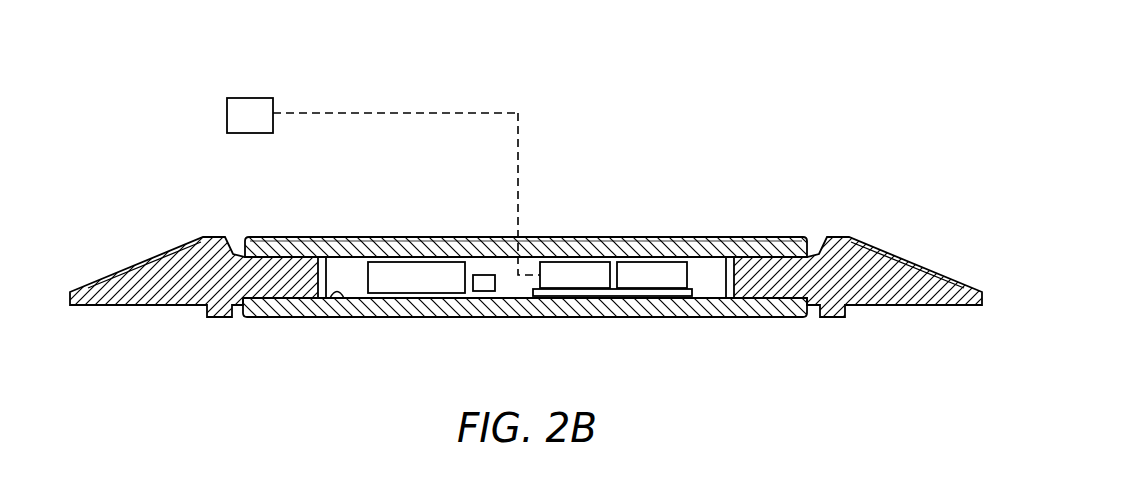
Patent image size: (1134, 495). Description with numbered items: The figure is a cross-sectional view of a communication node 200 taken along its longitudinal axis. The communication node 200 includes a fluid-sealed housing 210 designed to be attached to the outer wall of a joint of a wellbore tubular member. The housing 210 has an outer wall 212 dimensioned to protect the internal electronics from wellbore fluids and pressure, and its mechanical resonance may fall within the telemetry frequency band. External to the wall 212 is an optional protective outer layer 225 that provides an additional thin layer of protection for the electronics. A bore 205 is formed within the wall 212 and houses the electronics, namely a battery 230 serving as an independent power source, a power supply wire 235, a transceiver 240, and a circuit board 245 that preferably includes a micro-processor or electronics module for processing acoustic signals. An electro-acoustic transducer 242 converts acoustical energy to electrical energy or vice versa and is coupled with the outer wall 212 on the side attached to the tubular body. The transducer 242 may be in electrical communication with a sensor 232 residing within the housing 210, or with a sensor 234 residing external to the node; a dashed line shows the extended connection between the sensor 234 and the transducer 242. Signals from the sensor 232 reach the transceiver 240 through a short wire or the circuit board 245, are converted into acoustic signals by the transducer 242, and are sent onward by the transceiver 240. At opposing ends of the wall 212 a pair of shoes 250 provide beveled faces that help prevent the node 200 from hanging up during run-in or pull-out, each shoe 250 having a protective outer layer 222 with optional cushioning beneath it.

The communication node 200 is at (830, 162).
The bore 205 is at (329, 298).
The housing 210 is at (712, 317).
The outer wall 212 is at (723, 250).
The protective outer layer 222 is at (157, 268).
The protective outer layer 225 is at (327, 237).
The battery 230 is at (418, 262).
The sensor 232 is at (487, 291).
The sensor 234 is at (241, 98).
The power supply wire 235 is at (502, 290).
The transceiver 240 is at (648, 262).
The electro-acoustic transducer 242 is at (568, 262).
The circuit board 245 is at (600, 296).
The shoe 250 is at (140, 307).